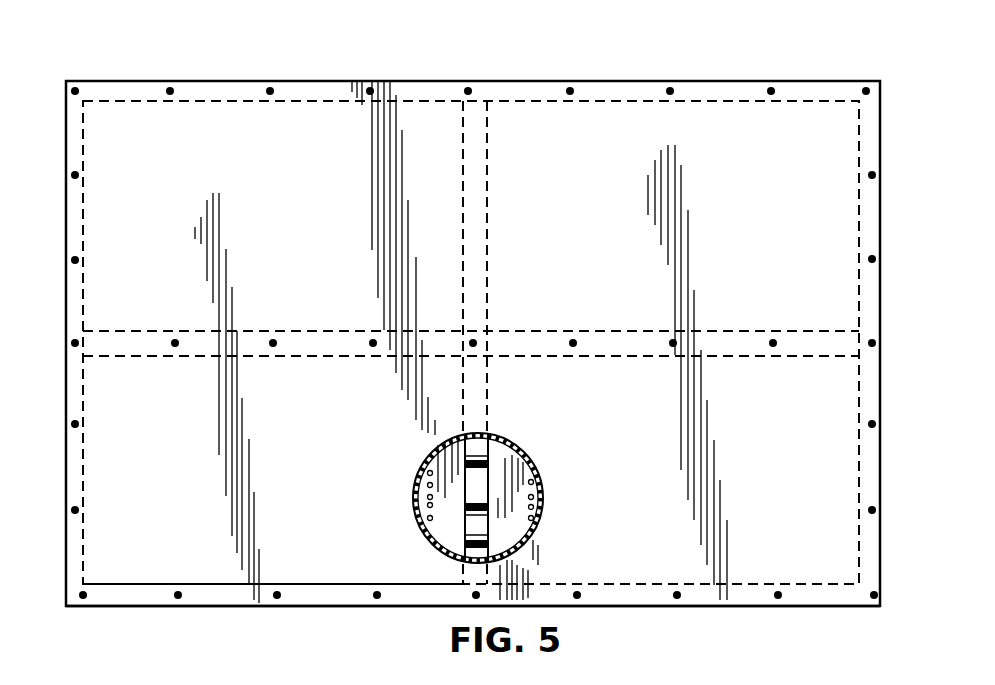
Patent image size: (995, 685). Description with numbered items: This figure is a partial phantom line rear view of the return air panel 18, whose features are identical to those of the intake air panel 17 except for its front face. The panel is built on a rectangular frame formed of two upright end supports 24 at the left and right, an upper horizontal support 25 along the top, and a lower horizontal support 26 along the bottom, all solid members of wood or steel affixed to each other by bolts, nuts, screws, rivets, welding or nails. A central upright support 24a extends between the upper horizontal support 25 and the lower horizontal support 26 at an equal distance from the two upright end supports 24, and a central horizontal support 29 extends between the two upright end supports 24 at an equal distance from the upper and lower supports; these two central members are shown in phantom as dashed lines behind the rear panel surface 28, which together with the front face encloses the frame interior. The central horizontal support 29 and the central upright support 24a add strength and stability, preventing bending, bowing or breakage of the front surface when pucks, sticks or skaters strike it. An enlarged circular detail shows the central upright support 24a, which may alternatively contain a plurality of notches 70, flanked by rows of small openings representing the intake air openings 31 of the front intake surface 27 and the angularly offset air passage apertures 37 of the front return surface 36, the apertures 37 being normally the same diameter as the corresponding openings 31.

The intake air panel 17 is at (476, 332).
The return air panel 18 is at (476, 332).
The upright end support 24 is at (476, 369).
The central upright support 24a is at (486, 118).
The upper horizontal support 25 is at (420, 81).
The lower horizontal support 26 is at (202, 607).
The front intake surface 27 is at (435, 483).
The rear panel surface 28 is at (313, 567).
The central horizontal support 29 is at (110, 357).
The intake air opening 31 is at (435, 520).
The front return surface 36 is at (425, 487).
The angularly offset air passage aperture 37 is at (424, 517).
The notch 70 is at (482, 485).